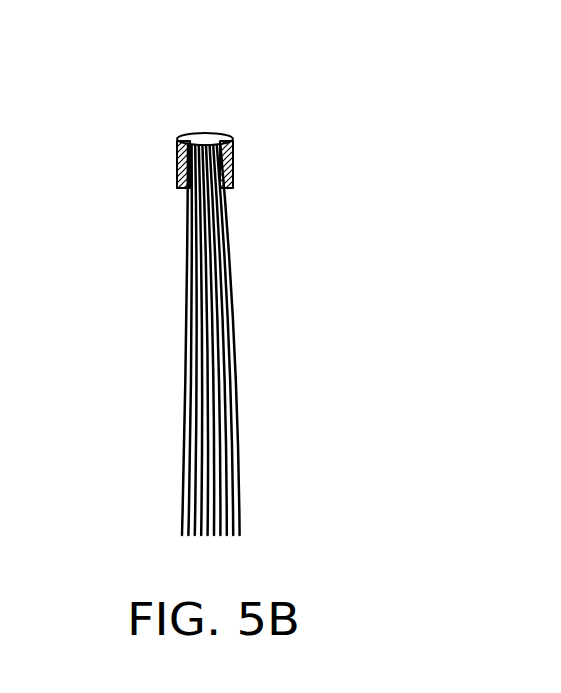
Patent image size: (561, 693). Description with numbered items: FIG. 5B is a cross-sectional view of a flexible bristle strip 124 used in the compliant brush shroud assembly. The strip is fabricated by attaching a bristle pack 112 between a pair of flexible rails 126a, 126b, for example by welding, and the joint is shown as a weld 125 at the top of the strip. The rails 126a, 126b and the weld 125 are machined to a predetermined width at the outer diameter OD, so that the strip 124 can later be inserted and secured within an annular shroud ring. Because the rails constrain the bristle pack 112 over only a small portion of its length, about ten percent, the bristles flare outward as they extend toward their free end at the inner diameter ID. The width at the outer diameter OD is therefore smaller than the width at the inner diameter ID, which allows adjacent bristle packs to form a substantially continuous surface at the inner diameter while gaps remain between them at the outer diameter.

The flexible bristle strip 124 is at (144, 93).
The bristle pack 112 is at (163, 288).
The weld 125 is at (176, 159).
The flexible rail 126a is at (177, 168).
The flexible rail 126b is at (235, 168).
The outer diameter OD is at (225, 133).
The inner diameter ID is at (241, 537).